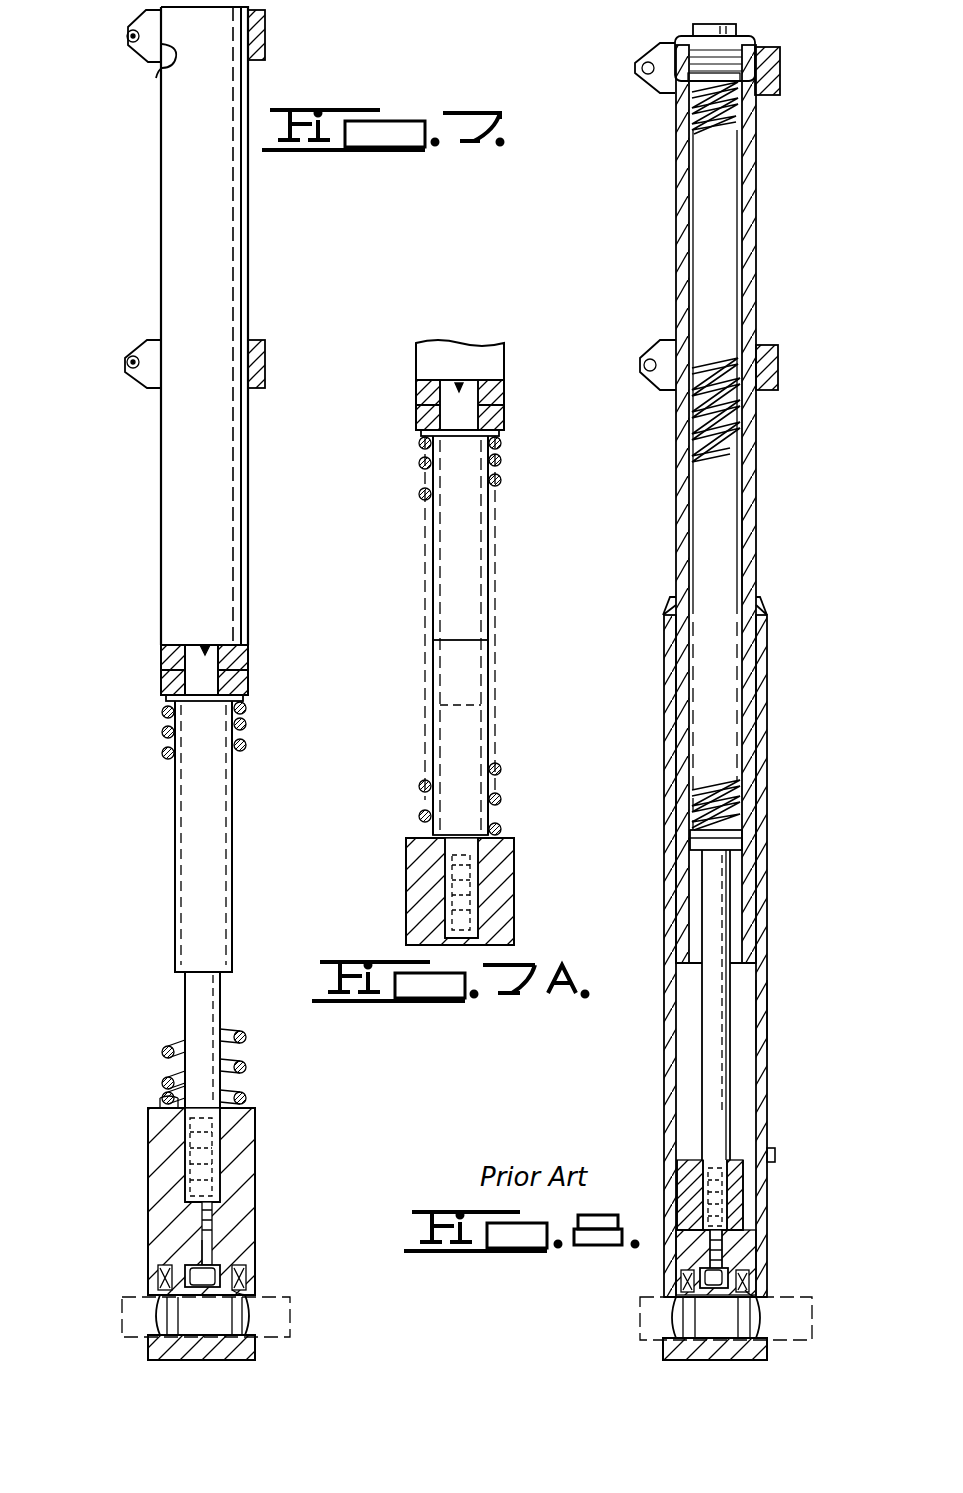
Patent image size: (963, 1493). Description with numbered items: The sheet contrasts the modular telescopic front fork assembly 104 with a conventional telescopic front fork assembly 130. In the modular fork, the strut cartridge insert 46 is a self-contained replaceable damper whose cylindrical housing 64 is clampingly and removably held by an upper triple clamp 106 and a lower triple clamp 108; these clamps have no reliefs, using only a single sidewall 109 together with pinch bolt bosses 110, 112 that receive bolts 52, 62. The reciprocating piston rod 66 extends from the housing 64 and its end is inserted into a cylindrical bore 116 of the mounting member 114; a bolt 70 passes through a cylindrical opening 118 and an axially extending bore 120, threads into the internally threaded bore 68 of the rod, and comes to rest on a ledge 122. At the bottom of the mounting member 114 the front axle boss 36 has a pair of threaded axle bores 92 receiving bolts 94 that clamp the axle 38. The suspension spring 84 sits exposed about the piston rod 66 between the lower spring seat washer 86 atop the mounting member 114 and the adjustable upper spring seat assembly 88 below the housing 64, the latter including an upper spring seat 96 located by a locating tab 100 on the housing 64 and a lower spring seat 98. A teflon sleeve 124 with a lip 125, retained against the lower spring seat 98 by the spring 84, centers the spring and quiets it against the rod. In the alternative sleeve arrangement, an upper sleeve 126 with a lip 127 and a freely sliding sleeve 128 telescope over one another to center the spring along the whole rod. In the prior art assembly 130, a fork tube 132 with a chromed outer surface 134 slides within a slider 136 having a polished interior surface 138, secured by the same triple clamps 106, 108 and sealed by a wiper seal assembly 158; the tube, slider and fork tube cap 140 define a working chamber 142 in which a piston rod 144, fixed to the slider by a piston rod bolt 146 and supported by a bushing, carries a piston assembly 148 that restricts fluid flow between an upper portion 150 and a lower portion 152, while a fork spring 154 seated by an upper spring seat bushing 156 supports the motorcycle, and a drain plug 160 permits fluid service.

In FIG. 7, the front axle boss 36 is at (178, 1346).
In FIG. 8, the front axle boss 36 is at (700, 1346).
In FIG. 7, the axle 38 is at (122, 1310).
In FIG. 8, the axle 38 is at (812, 1300).
In FIG. 7, the strut cartridge insert 46 is at (185, 190).
In FIG. 7, the bolt 52 is at (130, 44).
In FIG. 7, the bolt 62 is at (130, 368).
In FIG. 7, the housing 64 is at (250, 492).
In FIG. 7A, the housing 64 is at (504, 345).
In FIG. 7, the piston rod 66 is at (200, 994).
In FIG. 7A, the piston rod 66 is at (490, 558).
In FIG. 7, the threaded bore 68 is at (190, 1128).
In FIG. 7, the bolt 70 is at (204, 1212).
In FIG. 7, the suspension spring 84 is at (162, 756).
In FIG. 7A, the suspension spring 84 is at (500, 770).
In FIG. 7, the lower spring seat washer 86 is at (164, 1102).
In FIG. 7, the adjustable upper spring seat assembly 88 is at (250, 668).
In FIG. 7, the threaded axle bores 92 is at (260, 1277).
In FIG. 8, the threaded axle bores 92 is at (680, 1278).
In FIG. 7, the bolts 94 is at (288, 1306).
In FIG. 8, the bolts 94 is at (642, 1306).
In FIG. 7, the upper spring seat 96 is at (165, 656).
In FIG. 7, the lower spring seat 98 is at (170, 680).
In FIG. 7, the locating tab 100 is at (207, 642).
In FIG. 7, the modular telescopic front fork assembly 104 is at (135, 505).
In FIG. 7, the upper triple clamp 106 is at (266, 42).
In FIG. 8, the upper triple clamp 106 is at (762, 64).
In FIG. 7, the lower triple clamp 108 is at (258, 352).
In FIG. 8, the lower triple clamp 108 is at (778, 352).
In FIG. 7, the sidewall 109 is at (164, 70).
In FIG. 7, the pinch bolt boss 110 is at (130, 30).
In FIG. 7, the pinch bolt boss 112 is at (146, 345).
In FIG. 7, the mounting member 114 is at (170, 1176).
In FIG. 7A, the mounting member 114 is at (505, 876).
In FIG. 7, the cylindrical bore 116 is at (192, 1116).
In FIG. 7, the cylindrical opening 118 is at (222, 1290).
In FIG. 7, the bore 120 is at (200, 1242).
In FIG. 7, the ledge 122 is at (188, 1280).
In FIG. 7, the teflon sleeve 124 is at (200, 946).
In FIG. 7, the lip 125 is at (244, 700).
In FIG. 7A, the upper sleeve 126 is at (490, 518).
In FIG. 7A, the lip 127 is at (500, 435).
In FIG. 7A, the sleeve 128 is at (488, 702).
In FIG. 8, the telescopic front fork assembly 130 is at (796, 312).
In FIG. 8, the fork tube 132 is at (750, 172).
In FIG. 8, the outer surface 134 is at (754, 552).
In FIG. 8, the slider 136 is at (768, 1014).
In FIG. 8, the interior surface 138 is at (748, 1048).
In FIG. 8, the fork tube cap 140 is at (736, 30).
In FIG. 8, the working chamber 142 is at (730, 636).
In FIG. 8, the piston rod 144 is at (722, 902).
In FIG. 8, the piston rod bolt 146 is at (726, 1248).
In FIG. 8, the piston assembly 148 is at (728, 820).
In FIG. 8, the upper portion 150 is at (726, 740).
In FIG. 8, the lower portion 152 is at (748, 978).
In FIG. 8, the fork spring 154 is at (725, 446).
In FIG. 8, the upper spring seat bushing 156 is at (690, 58).
In FIG. 8, the wiper seal assembly 158 is at (764, 602).
In FIG. 8, the drain plug 160 is at (776, 1156).